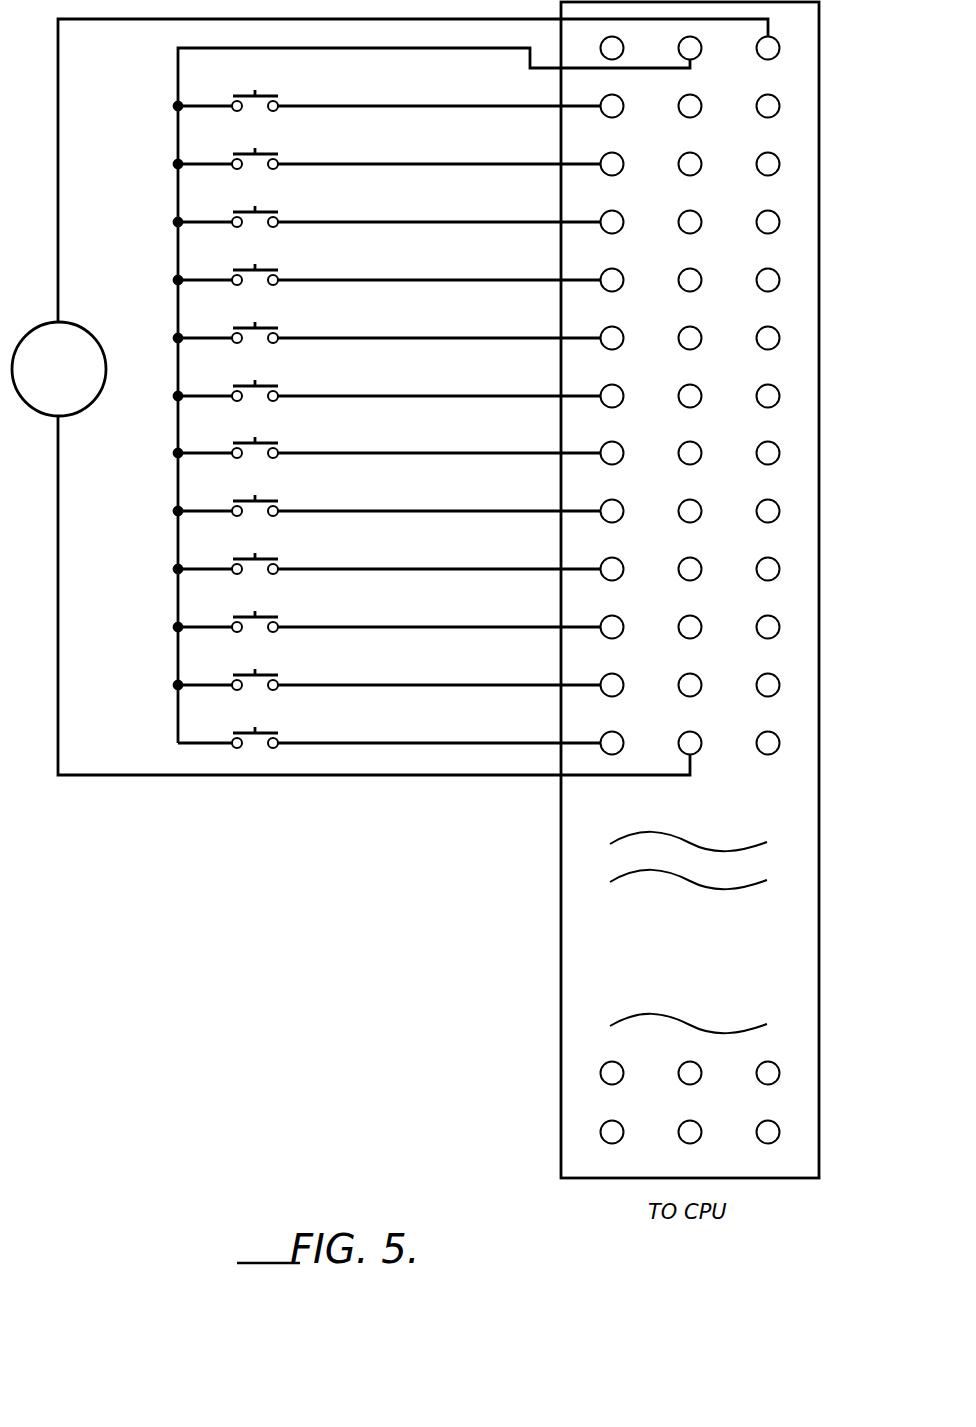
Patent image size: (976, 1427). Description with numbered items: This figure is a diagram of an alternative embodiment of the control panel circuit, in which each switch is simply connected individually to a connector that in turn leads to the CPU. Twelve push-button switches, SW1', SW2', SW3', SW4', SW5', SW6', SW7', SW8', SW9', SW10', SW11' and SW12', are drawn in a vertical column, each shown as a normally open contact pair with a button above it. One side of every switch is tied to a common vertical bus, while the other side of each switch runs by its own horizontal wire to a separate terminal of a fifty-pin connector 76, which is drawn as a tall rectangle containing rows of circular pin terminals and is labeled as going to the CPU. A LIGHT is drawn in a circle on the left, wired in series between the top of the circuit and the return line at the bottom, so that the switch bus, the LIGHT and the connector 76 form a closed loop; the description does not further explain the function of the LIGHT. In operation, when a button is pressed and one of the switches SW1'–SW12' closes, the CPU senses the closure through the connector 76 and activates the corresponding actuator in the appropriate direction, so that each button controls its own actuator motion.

The 50-pin connector 76 is at (819, 501).
The indicator light LIGHT is at (59, 369).
The switch SW1' is at (387, 88).
The switch SW2' is at (387, 146).
The switch SW3' is at (387, 204).
The switch SW4' is at (387, 262).
The switch SW5' is at (387, 320).
The switch SW6' is at (387, 378).
The switch SW7' is at (387, 435).
The switch SW8' is at (387, 493).
The switch SW9' is at (387, 551).
The switch SW10' is at (387, 609).
The switch SW11' is at (387, 667).
The switch SW12' is at (389, 725).